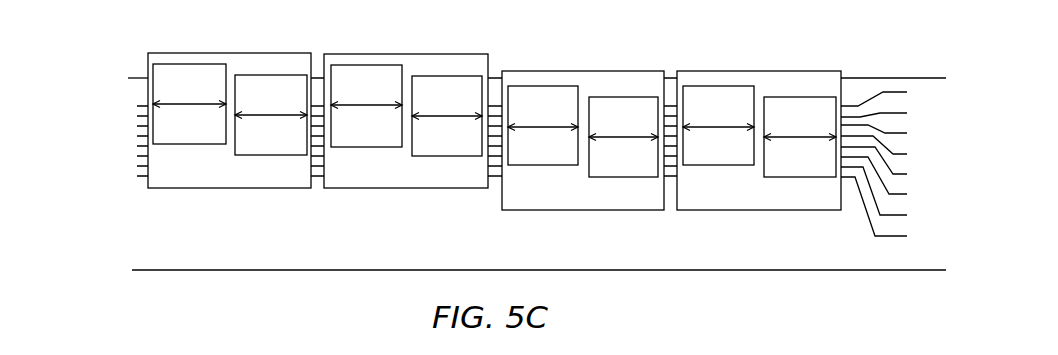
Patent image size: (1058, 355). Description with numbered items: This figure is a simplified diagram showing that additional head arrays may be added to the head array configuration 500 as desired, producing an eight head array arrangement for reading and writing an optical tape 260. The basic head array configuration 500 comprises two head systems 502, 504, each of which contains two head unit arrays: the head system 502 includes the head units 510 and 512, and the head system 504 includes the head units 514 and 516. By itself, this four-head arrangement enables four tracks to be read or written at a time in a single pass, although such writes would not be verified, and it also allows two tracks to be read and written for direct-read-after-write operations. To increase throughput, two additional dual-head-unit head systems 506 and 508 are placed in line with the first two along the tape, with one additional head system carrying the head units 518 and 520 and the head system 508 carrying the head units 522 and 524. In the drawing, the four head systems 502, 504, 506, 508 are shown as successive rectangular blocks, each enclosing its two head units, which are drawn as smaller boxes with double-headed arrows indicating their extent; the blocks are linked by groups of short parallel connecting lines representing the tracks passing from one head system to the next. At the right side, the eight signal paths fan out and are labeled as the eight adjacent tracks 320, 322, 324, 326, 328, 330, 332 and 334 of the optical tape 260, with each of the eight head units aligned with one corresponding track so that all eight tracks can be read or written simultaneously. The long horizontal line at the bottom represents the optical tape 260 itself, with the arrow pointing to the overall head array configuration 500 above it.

The optical tape 260 is at (186, 253).
The head array configuration 500 is at (301, 214).
The head system 502 is at (215, 53).
The head system 504 is at (388, 53).
The head system 506 is at (565, 71).
The head system 508 is at (740, 71).
The head unit 510 is at (178, 137).
The head unit 512 is at (260, 148).
The head unit 514 is at (378, 138).
The head unit 516 is at (436, 149).
The head unit 518 is at (532, 160).
The head unit 520 is at (612, 170).
The head unit 522 is at (730, 160).
The head unit 524 is at (789, 170).
The track 320 is at (890, 94).
The track 322 is at (890, 113).
The track 324 is at (890, 133).
The track 326 is at (890, 150).
The track 328 is at (890, 166).
The track 330 is at (890, 181).
The track 332 is at (890, 196).
The track 334 is at (890, 212).